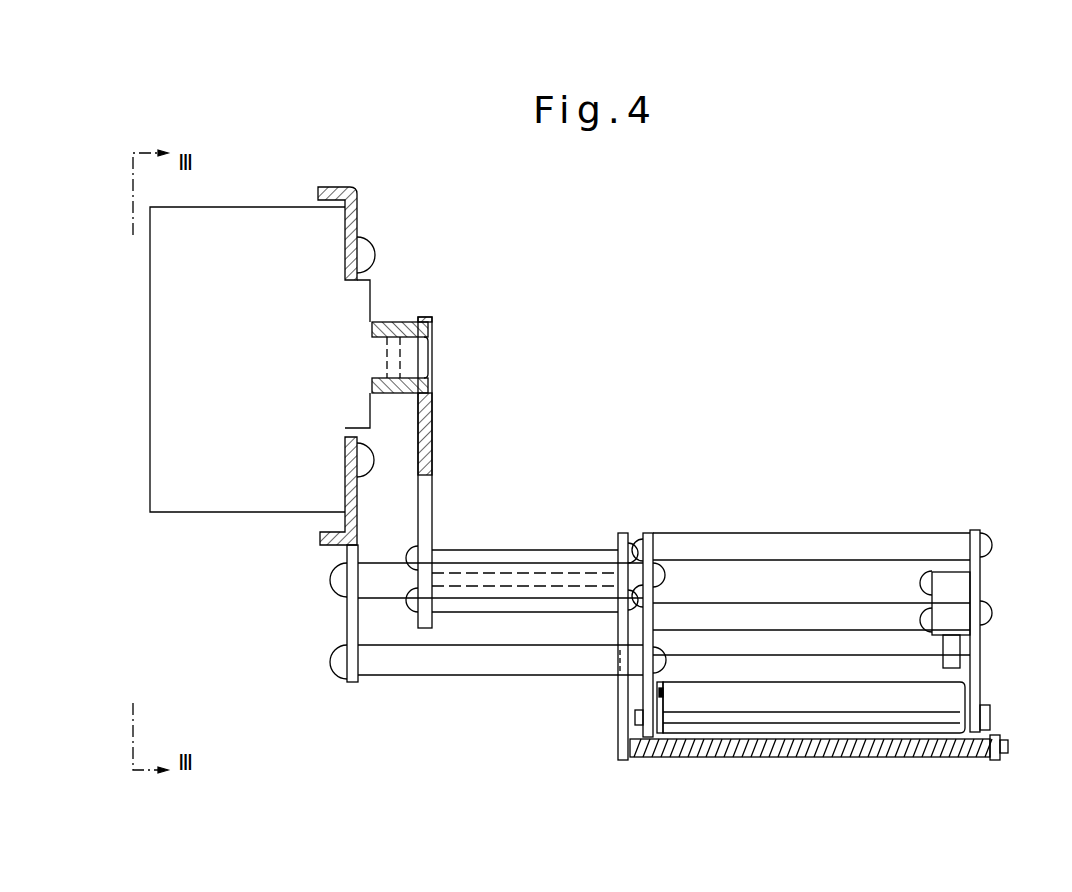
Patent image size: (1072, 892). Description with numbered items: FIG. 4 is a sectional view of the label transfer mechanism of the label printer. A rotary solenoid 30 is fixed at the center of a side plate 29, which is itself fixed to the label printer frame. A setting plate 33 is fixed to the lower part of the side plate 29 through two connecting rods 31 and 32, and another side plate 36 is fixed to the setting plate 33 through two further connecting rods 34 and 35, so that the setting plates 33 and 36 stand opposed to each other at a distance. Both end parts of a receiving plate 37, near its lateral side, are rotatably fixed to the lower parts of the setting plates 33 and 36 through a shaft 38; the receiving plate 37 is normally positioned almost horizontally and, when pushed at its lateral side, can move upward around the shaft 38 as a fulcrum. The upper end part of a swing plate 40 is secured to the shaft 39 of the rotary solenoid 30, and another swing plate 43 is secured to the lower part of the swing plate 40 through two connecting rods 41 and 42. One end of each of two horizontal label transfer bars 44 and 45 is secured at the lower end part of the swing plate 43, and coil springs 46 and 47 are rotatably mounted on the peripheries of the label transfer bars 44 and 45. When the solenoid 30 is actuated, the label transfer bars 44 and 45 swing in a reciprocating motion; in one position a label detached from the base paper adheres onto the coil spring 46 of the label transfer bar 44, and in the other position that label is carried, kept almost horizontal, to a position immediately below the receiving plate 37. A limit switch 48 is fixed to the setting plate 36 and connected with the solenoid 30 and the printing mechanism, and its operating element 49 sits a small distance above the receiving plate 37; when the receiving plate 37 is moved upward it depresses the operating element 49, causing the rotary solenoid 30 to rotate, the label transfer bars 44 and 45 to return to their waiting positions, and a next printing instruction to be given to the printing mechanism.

The side plate 29 is at (358, 218).
The rotary solenoid 30 is at (168, 358).
The connecting rod 31 is at (497, 565).
The connecting rod 32 is at (465, 665).
The setting plate 33 is at (652, 548).
The connecting rod 34 is at (795, 543).
The connecting rod 35 is at (840, 617).
The side plate 36 is at (975, 564).
The receiving plate 37 is at (800, 742).
The shaft 38 is at (708, 722).
The shaft 39 is at (428, 357).
The swing plate 40 is at (430, 494).
The connecting rod 41 is at (572, 550).
The connecting rod 42 is at (510, 607).
The swing plate 43 is at (622, 720).
The label transfer bar 44 is at (811, 787).
The label transfer bar 45 is at (811, 787).
The coil spring 46 is at (971, 775).
The coil spring 47 is at (935, 756).
The limit switch 48 is at (965, 590).
The operating element 49 is at (958, 646).